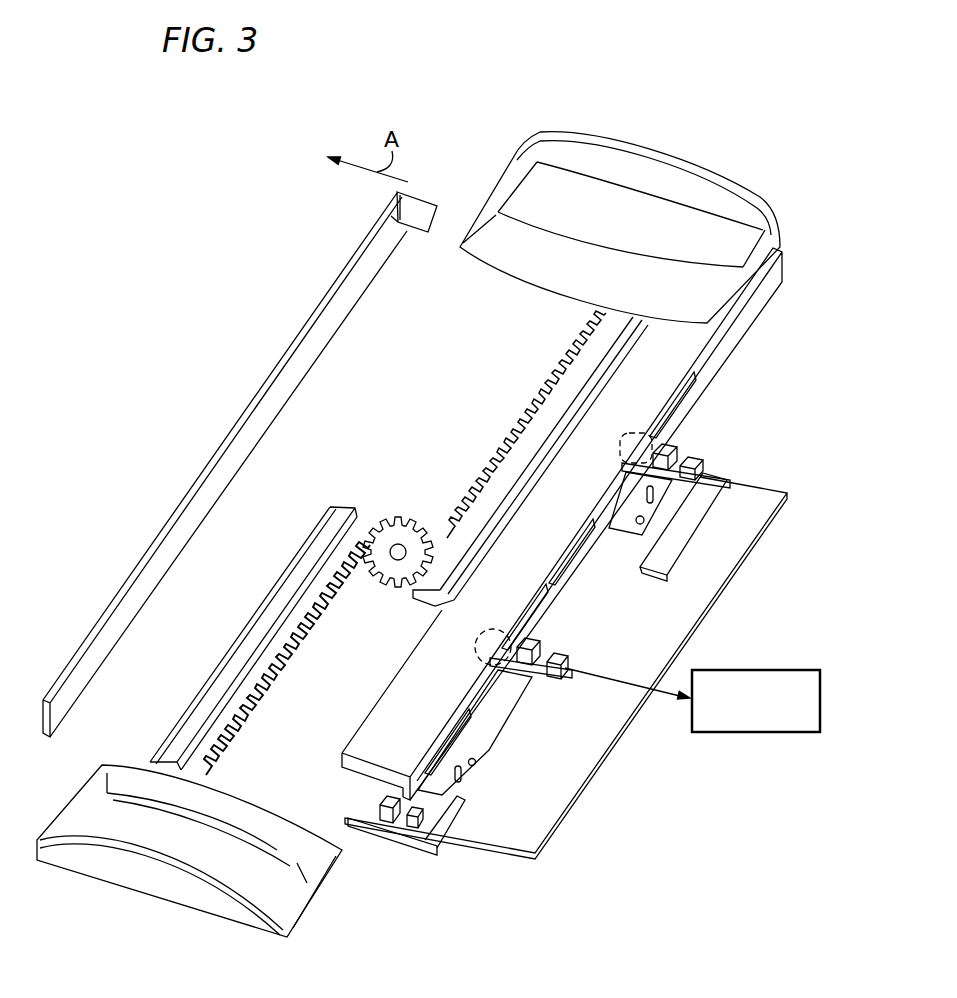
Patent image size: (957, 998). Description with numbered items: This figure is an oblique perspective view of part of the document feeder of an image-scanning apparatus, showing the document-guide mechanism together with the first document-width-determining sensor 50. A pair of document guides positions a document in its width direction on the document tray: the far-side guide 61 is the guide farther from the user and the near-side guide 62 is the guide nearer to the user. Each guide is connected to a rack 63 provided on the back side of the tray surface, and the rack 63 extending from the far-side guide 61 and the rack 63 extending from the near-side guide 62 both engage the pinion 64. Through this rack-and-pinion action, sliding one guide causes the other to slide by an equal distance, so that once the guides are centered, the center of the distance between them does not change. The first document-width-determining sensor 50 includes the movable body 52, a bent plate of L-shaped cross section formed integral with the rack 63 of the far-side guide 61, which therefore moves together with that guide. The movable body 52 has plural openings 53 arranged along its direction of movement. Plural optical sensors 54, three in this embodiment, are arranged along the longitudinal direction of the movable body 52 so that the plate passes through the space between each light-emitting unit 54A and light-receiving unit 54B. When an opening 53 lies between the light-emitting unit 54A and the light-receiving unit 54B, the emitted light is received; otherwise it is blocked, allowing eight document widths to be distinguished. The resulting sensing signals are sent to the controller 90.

The first document-width-determining sensor 50 is at (416, 912).
The movable body 52 is at (388, 718).
The openings 53 is at (690, 414).
The optical sensors 54 is at (688, 490).
The light-emitting unit 54A is at (622, 452).
The light-receiving unit 54B is at (676, 442).
The far-side guide 61 is at (653, 168).
The near-side guide 62 is at (155, 885).
The rack 63 is at (537, 430).
The pinion 64 is at (395, 535).
The controller 90 is at (782, 669).